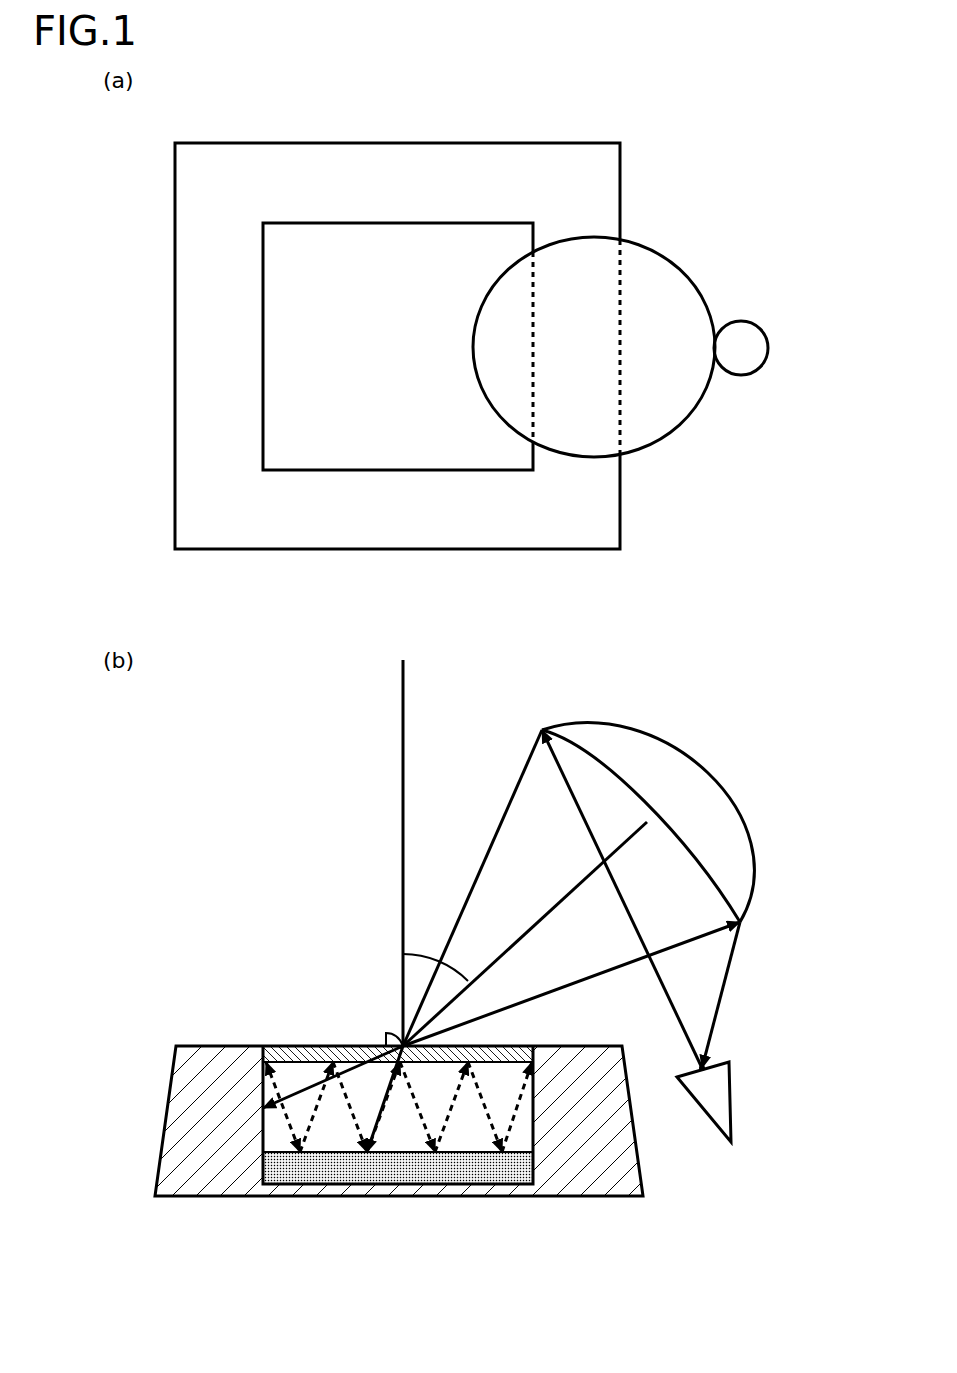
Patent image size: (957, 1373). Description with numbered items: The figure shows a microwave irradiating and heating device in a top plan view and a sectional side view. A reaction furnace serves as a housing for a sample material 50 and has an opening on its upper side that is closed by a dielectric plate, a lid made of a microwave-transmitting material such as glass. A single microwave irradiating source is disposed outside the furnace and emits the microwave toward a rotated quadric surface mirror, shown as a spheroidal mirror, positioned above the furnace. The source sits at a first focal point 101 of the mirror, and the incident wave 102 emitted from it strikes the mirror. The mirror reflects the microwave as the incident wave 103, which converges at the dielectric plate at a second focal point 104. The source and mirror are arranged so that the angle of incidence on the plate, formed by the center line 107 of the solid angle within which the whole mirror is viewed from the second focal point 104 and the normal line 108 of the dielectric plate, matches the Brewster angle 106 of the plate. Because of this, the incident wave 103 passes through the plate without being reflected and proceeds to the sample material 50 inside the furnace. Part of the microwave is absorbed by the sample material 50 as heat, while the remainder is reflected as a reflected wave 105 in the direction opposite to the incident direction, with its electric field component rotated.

The sample material 50 is at (383, 1180).
The first focal point 101 is at (706, 1066).
The incident wave 102 is at (723, 982).
The incident wave 103 is at (512, 797).
The second focal point 104 is at (386, 1037).
The reflected wave 105 is at (350, 1112).
The Brewster angle 106 is at (432, 957).
The center line 107 is at (557, 903).
The normal line 108 is at (403, 712).